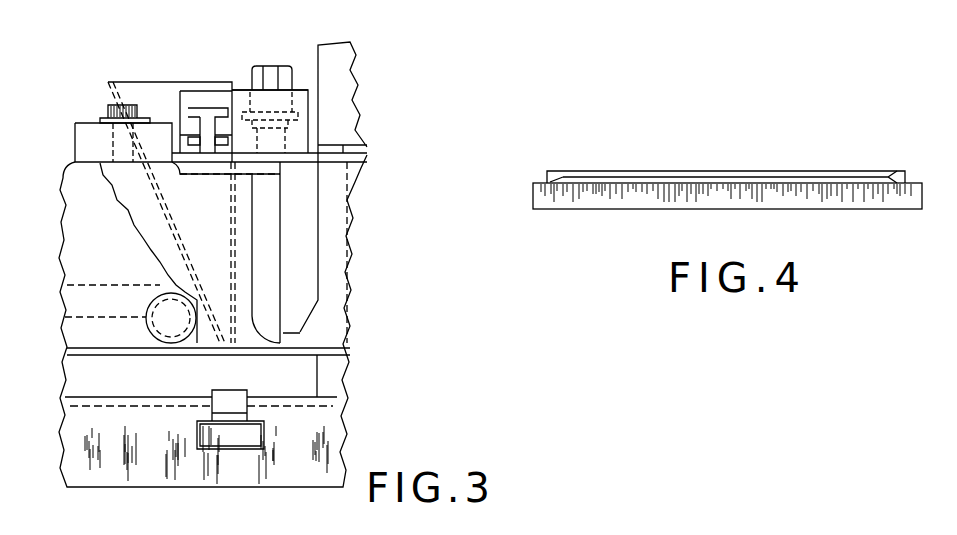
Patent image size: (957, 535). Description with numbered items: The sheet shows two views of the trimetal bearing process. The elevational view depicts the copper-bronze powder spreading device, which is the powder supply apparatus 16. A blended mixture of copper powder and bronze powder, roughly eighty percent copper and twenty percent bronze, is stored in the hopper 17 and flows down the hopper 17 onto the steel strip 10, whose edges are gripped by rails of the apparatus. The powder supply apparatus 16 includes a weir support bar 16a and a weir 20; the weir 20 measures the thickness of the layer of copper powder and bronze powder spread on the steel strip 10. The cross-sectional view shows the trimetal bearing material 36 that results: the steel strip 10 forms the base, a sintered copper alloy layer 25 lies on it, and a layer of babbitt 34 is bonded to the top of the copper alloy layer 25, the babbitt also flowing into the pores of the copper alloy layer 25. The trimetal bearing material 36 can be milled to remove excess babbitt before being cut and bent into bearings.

In FIG. 3, the steel strip 10 is at (145, 350).
In FIG. 4, the steel strip 10 is at (837, 202).
In FIG. 3, the hopper 17 is at (167, 90).
In FIG. 3, the powder supply apparatus 16 is at (248, 64).
In FIG. 3, the weir support bar 16a is at (302, 90).
In FIG. 3, the weir 20 is at (272, 312).
In FIG. 4, the trimetal bearing material 36 is at (556, 177).
In FIG. 4, the layer of babbitt 34 is at (728, 175).
In FIG. 4, the sintered copper alloy layer 25 is at (803, 182).